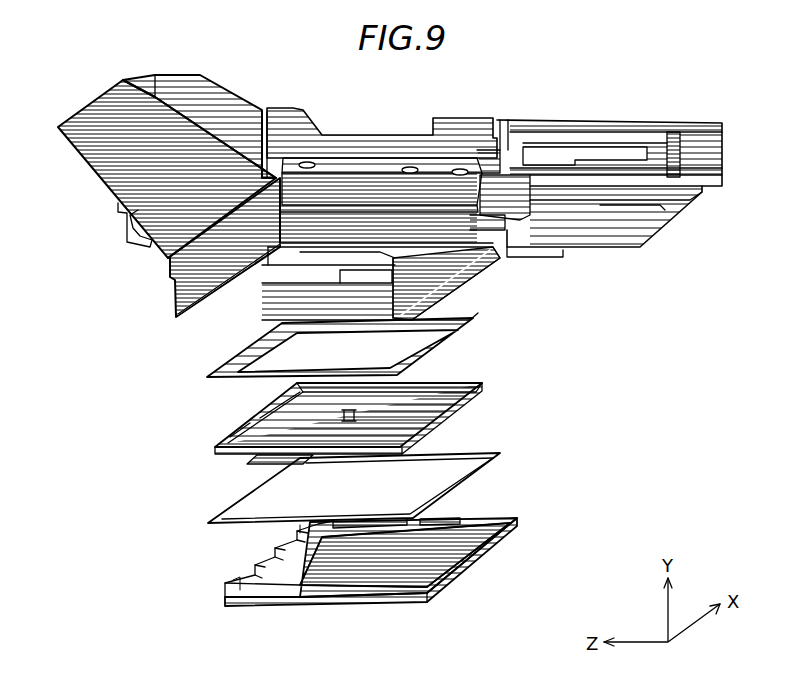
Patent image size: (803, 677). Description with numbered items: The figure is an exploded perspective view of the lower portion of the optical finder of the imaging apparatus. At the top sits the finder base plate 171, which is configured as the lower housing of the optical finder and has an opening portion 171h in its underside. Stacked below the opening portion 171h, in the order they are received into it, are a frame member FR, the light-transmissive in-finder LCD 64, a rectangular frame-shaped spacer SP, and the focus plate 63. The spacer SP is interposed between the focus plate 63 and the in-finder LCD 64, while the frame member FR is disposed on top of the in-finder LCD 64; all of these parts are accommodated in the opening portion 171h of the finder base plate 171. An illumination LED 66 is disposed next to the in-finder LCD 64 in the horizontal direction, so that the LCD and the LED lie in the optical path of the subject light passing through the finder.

The finder base plate 171 is at (118, 190).
The opening portion 171h is at (208, 327).
The frame member FR is at (447, 343).
The in-finder LCD 64 is at (467, 411).
The illumination LED 66 is at (253, 467).
The spacer SP is at (480, 476).
The focus plate 63 is at (480, 556).